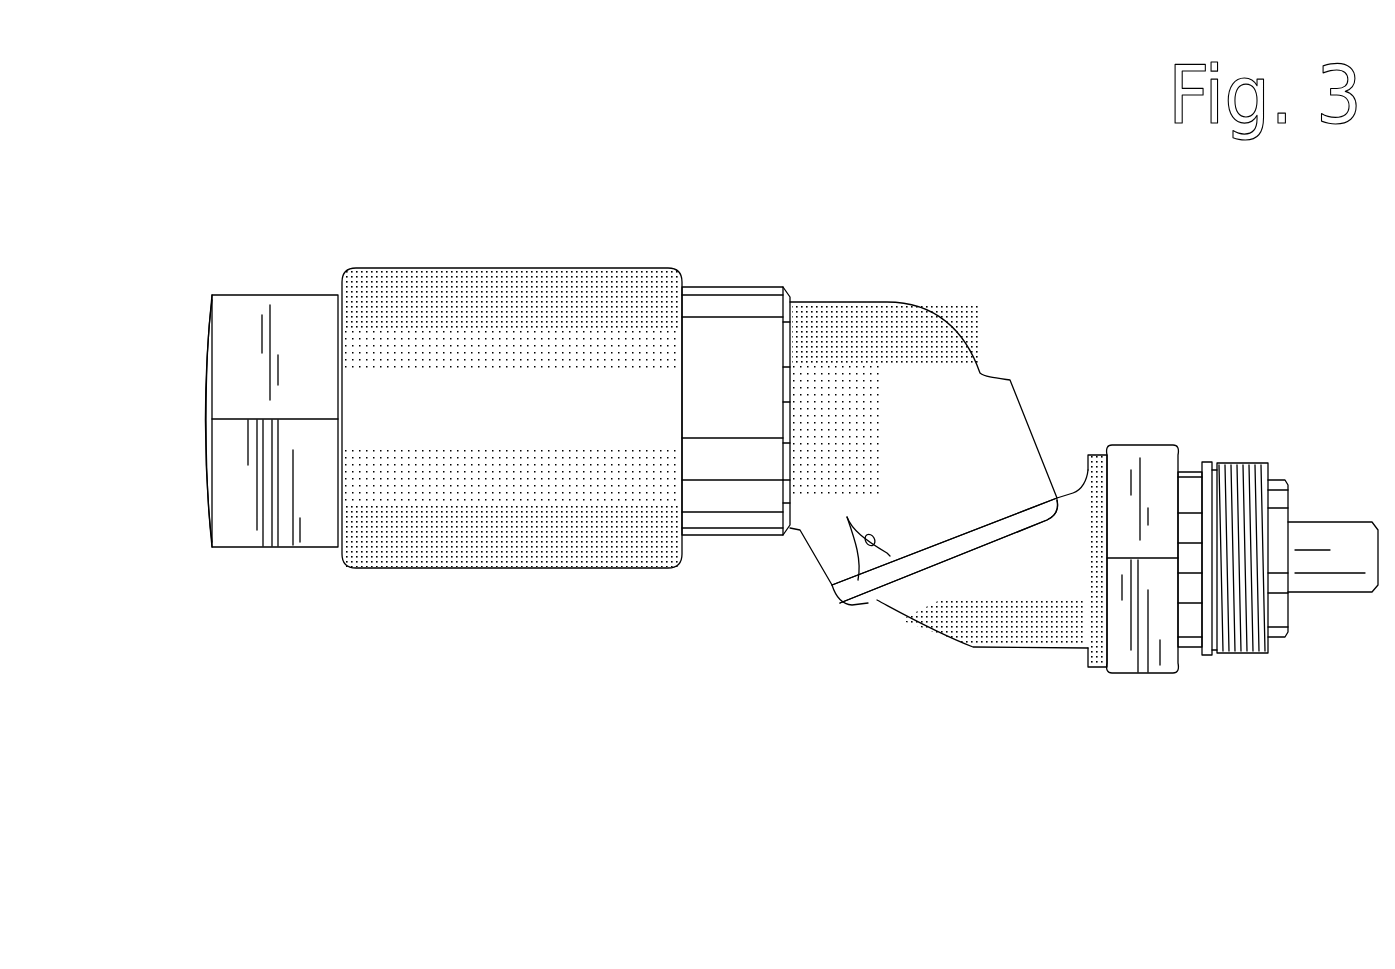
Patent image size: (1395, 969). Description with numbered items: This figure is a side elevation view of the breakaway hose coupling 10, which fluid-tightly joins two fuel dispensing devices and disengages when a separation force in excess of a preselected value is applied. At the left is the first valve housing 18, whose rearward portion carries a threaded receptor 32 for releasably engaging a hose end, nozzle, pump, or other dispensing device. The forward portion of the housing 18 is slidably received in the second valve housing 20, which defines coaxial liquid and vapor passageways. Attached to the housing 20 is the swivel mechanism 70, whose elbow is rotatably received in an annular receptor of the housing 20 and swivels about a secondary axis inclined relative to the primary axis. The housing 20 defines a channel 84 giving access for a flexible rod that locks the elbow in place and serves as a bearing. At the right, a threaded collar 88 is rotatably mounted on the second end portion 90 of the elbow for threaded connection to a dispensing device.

The breakaway hose coupling 10 is at (1103, 252).
The first valve housing 18 is at (268, 296).
The second valve housing 20 is at (722, 287).
The threaded receptor 32 is at (202, 470).
The swivel mechanism 70 is at (830, 591).
The channel 84 is at (863, 548).
The threaded collar 88 is at (1188, 466).
The second end portion 90 is at (1088, 672).